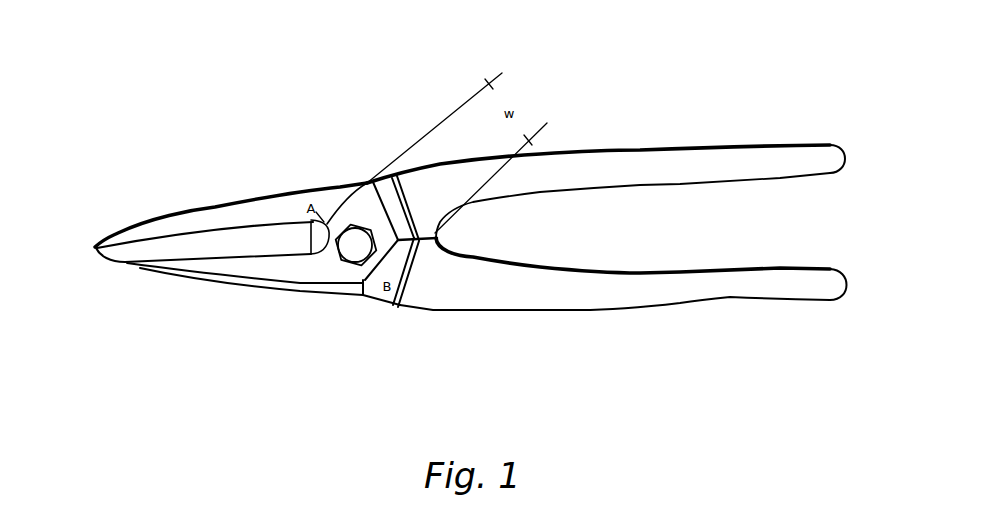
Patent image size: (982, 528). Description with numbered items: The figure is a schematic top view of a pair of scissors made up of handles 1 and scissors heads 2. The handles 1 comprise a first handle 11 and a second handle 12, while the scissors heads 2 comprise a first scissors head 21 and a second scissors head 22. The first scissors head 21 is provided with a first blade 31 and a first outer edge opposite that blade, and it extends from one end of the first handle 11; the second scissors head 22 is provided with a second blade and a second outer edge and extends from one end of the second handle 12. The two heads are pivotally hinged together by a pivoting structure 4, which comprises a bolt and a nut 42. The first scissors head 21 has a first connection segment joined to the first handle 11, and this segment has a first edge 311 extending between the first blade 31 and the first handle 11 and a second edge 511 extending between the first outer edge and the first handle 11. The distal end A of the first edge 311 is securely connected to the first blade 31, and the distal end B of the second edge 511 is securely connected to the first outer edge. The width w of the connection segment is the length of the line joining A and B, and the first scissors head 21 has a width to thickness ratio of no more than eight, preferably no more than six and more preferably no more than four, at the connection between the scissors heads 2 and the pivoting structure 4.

The handles 1 is at (607, 213).
The first handle 11 is at (537, 173).
The second handle 12 is at (490, 295).
The scissors heads 2 is at (230, 174).
The second scissors head 22 is at (216, 218).
The first blade 31 is at (172, 224).
The first edge 311 is at (365, 183).
The pivoting structure 4 is at (363, 182).
The nut 42 is at (356, 250).
The first scissors head 21 is at (348, 273).
The second edge 511 is at (395, 270).